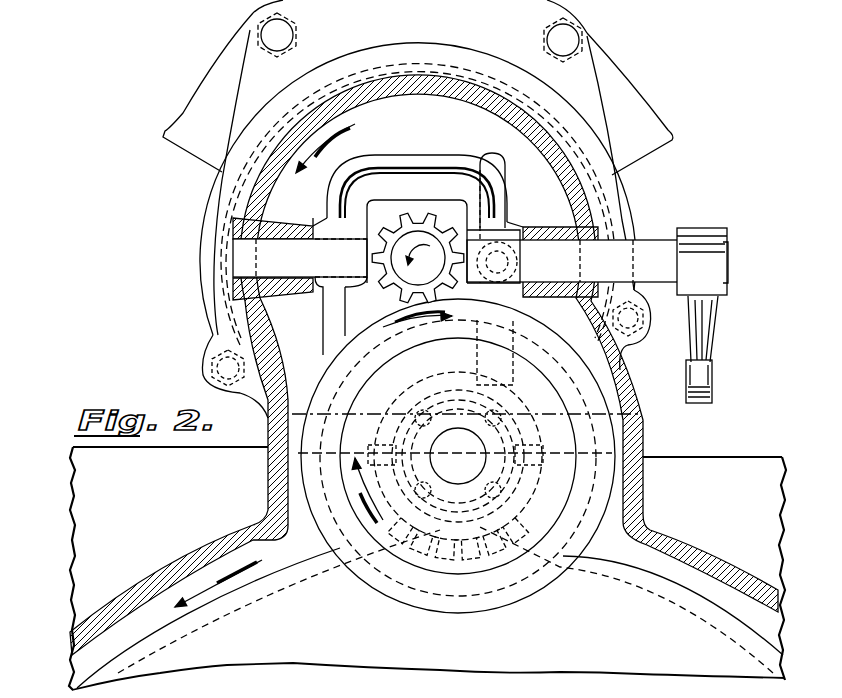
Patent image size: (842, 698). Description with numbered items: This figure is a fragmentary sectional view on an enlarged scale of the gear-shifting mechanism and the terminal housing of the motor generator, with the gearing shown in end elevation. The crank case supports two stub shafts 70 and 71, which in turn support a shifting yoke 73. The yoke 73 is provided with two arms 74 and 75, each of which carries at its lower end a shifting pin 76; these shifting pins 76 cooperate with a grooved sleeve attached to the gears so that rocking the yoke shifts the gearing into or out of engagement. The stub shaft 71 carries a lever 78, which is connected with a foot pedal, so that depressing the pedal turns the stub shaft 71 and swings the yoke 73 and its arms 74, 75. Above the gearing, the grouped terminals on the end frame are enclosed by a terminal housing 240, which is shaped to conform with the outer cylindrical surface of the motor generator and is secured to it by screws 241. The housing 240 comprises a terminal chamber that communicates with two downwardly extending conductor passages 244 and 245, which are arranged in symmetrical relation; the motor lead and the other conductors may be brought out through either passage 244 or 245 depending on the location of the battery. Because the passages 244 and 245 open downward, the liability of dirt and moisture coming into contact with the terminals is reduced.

The terminal housing 240 is at (253, 43).
The screws 241 is at (282, 34).
The conductor passage 244 is at (197, 139).
The conductor passage 245 is at (637, 157).
The shifting yoke 73 is at (398, 187).
The stub shaft 70 is at (248, 253).
The stub shaft 71 is at (647, 262).
The arm 74 is at (330, 313).
The arm 75 is at (640, 414).
The shifting pin 76 is at (410, 534).
The lever 78 is at (715, 388).